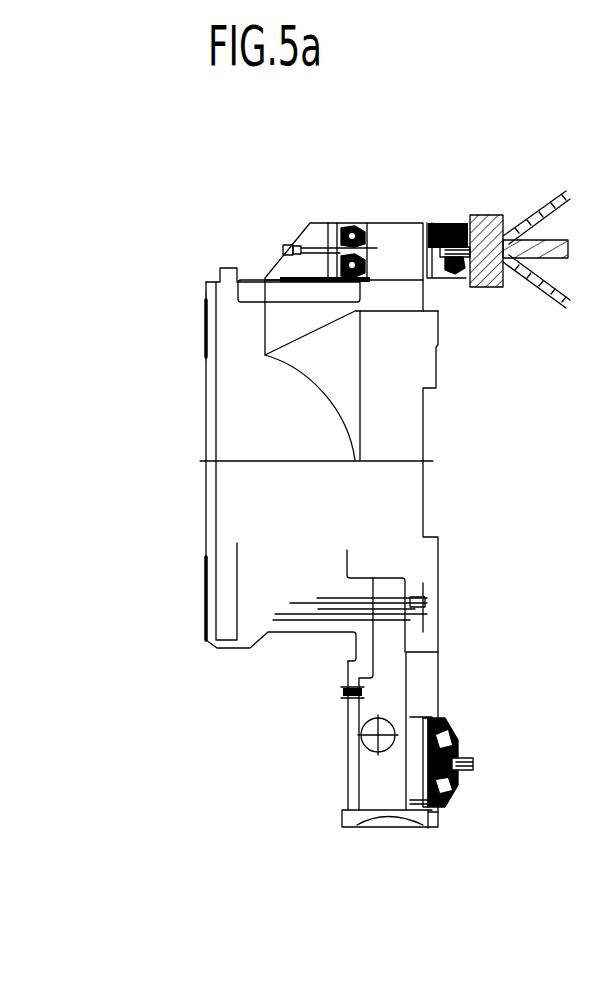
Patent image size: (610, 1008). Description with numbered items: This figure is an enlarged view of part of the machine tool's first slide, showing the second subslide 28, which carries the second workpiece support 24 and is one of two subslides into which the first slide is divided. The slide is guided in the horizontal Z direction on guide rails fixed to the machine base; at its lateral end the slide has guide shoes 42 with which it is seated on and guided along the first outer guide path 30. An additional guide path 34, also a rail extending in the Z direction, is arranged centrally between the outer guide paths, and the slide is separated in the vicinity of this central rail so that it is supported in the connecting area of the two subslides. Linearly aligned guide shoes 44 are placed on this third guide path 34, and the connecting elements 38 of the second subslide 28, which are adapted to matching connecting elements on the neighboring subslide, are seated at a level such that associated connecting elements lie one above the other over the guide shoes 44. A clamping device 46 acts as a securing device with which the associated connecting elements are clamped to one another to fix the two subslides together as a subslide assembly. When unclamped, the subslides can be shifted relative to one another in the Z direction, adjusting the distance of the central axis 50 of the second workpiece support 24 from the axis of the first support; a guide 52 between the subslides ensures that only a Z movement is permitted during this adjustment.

The second workpiece support 24 is at (250, 445).
The second subslide 28 is at (180, 322).
The first outer guide path 30 is at (457, 782).
The additional guide path 34 is at (498, 215).
The connecting elements 38 is at (343, 223).
The guide shoes 42 is at (427, 678).
The guide shoes 44 is at (432, 226).
The clamping device 46 is at (300, 212).
The central axis 50 is at (395, 463).
The guide 52 is at (362, 222).